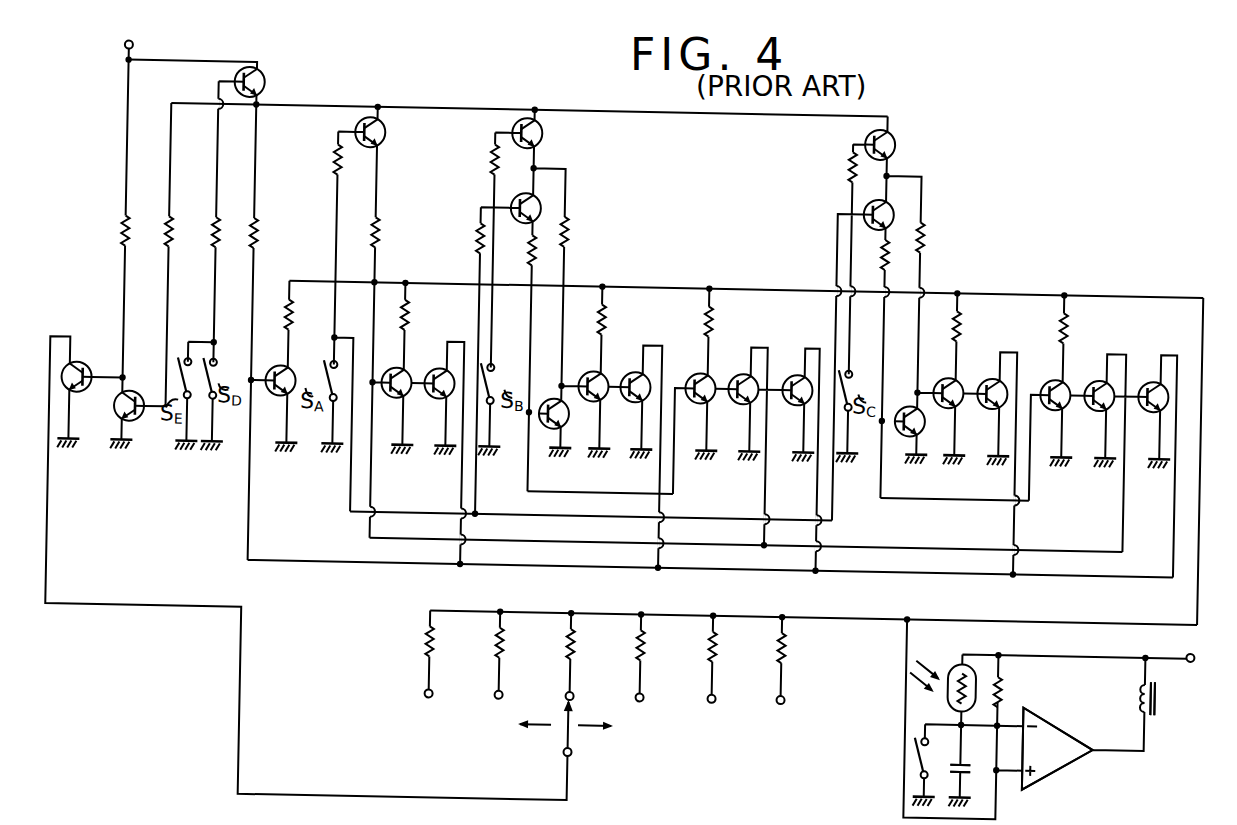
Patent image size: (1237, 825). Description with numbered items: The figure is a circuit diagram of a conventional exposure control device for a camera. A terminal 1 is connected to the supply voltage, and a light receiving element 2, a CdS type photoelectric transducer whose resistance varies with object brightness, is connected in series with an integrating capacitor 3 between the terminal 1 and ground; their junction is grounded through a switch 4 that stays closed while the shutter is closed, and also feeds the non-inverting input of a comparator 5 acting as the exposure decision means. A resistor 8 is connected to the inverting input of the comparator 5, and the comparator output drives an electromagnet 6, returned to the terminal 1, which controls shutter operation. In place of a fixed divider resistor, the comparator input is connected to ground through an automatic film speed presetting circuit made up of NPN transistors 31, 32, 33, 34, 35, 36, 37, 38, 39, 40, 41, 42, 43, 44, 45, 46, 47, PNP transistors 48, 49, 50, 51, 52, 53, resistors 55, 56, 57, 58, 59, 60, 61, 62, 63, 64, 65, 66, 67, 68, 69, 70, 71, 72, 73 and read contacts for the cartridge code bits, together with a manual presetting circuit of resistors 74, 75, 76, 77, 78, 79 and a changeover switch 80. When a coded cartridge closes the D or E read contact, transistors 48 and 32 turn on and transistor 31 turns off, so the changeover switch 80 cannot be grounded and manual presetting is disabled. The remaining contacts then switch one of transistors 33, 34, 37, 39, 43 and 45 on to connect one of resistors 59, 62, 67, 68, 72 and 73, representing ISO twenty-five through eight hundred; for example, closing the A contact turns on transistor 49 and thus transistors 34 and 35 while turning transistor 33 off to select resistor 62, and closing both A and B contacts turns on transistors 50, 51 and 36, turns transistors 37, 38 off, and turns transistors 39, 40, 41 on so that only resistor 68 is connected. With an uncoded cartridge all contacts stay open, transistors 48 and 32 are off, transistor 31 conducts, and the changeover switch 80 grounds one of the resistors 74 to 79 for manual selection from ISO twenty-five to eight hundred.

The terminal 1 is at (126, 54).
The light receiving element 2 is at (954, 692).
The integrating capacitor 3 is at (977, 763).
The switch 4 is at (934, 742).
The comparator 5 is at (1063, 720).
The electromagnet 6 is at (1146, 690).
The resistor 8 is at (1008, 680).
The NPN transistor 31 is at (78, 374).
The NPN transistor 32 is at (130, 404).
The NPN transistor 33 is at (294, 376).
The NPN transistor 34 is at (406, 376).
The NPN transistor 35 is at (430, 396).
The NPN transistor 36 is at (566, 424).
The NPN transistor 37 is at (588, 374).
The NPN transistor 38 is at (630, 374).
The NPN transistor 39 is at (706, 374).
The NPN transistor 40 is at (735, 404).
The NPN transistor 41 is at (794, 373).
The NPN transistor 42 is at (918, 426).
The NPN transistor 43 is at (942, 376).
The NPN transistor 44 is at (984, 402).
The NPN transistor 45 is at (1048, 376).
The NPN transistor 46 is at (1090, 402).
The NPN transistor 47 is at (1146, 374).
The PNP transistor 48 is at (258, 78).
The PNP transistor 49 is at (378, 129).
The PNP transistor 50 is at (536, 127).
The PNP transistor 51 is at (532, 210).
The PNP transistor 52 is at (890, 140).
The PNP transistor 53 is at (887, 208).
The resistor 55 is at (118, 240).
The resistor 56 is at (153, 230).
The resistor 57 is at (208, 240).
The resistor 58 is at (240, 230).
The resistor 59 is at (283, 304).
The resistor 60 is at (329, 170).
The resistor 61 is at (376, 235).
The resistor 62 is at (408, 318).
The resistor 63 is at (474, 244).
The resistor 64 is at (487, 164).
The resistor 65 is at (526, 260).
The resistor 66 is at (563, 232).
The resistor 67 is at (605, 318).
The resistor 68 is at (712, 316).
The resistor 69 is at (844, 165).
The resistor 70 is at (879, 248).
The resistor 71 is at (921, 230).
The resistor 72 is at (960, 316).
The resistor 73 is at (1067, 316).
The manual presetting resistor 74 is at (430, 652).
The manual presetting resistor 75 is at (500, 652).
The manual presetting resistor 76 is at (570, 649).
The manual presetting resistor 77 is at (642, 645).
The manual presetting resistor 78 is at (712, 664).
The manual presetting resistor 79 is at (792, 648).
The changeover switch 80 is at (576, 734).